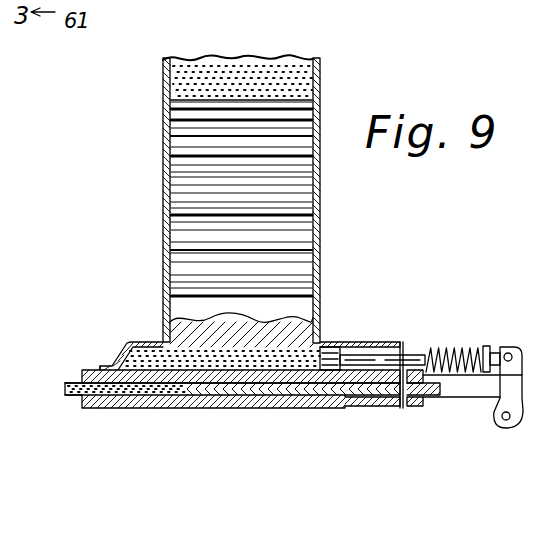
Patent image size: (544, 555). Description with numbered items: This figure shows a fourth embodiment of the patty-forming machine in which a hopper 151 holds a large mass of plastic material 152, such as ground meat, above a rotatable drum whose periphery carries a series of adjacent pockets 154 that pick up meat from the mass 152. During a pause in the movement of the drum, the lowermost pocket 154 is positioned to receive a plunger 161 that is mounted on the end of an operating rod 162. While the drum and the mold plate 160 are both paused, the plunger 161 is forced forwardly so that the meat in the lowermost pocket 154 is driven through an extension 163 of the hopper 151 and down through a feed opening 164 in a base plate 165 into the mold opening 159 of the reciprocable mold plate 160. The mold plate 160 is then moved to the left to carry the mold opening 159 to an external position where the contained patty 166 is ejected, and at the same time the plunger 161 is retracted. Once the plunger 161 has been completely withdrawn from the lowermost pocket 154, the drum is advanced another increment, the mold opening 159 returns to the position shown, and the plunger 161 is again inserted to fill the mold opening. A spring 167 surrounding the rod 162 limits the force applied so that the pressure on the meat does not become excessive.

The hopper 151 is at (320, 77).
The plastic material 152 is at (243, 77).
The pocket 154 is at (315, 312).
The mold opening 159 is at (185, 385).
The mold plate 160 is at (300, 385).
The plunger 161 is at (330, 350).
The operating rod 162 is at (378, 357).
The extension 163 is at (122, 350).
The feed opening 164 is at (108, 396).
The base plate 165 is at (85, 378).
The patty 166 is at (162, 392).
The spring 167 is at (465, 345).